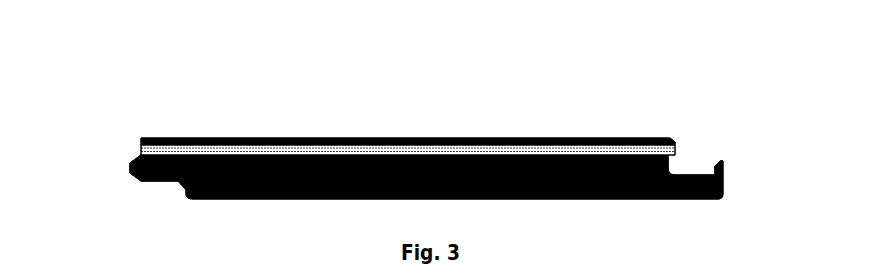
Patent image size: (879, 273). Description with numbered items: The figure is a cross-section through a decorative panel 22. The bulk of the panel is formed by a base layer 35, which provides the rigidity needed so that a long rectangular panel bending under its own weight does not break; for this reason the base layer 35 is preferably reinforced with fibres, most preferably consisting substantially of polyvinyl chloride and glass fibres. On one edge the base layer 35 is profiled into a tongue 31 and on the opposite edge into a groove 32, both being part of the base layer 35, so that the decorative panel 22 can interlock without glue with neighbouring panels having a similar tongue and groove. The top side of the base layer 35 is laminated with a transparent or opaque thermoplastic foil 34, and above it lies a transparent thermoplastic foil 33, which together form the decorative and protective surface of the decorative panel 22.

The decorative panel 22 is at (385, 118).
The tongue 31 is at (117, 173).
The groove 32 is at (680, 162).
The transparent thermoplastic foil 33 is at (433, 131).
The transparent or opaque thermoplastic foil 34 is at (482, 145).
The base layer 35 is at (547, 150).